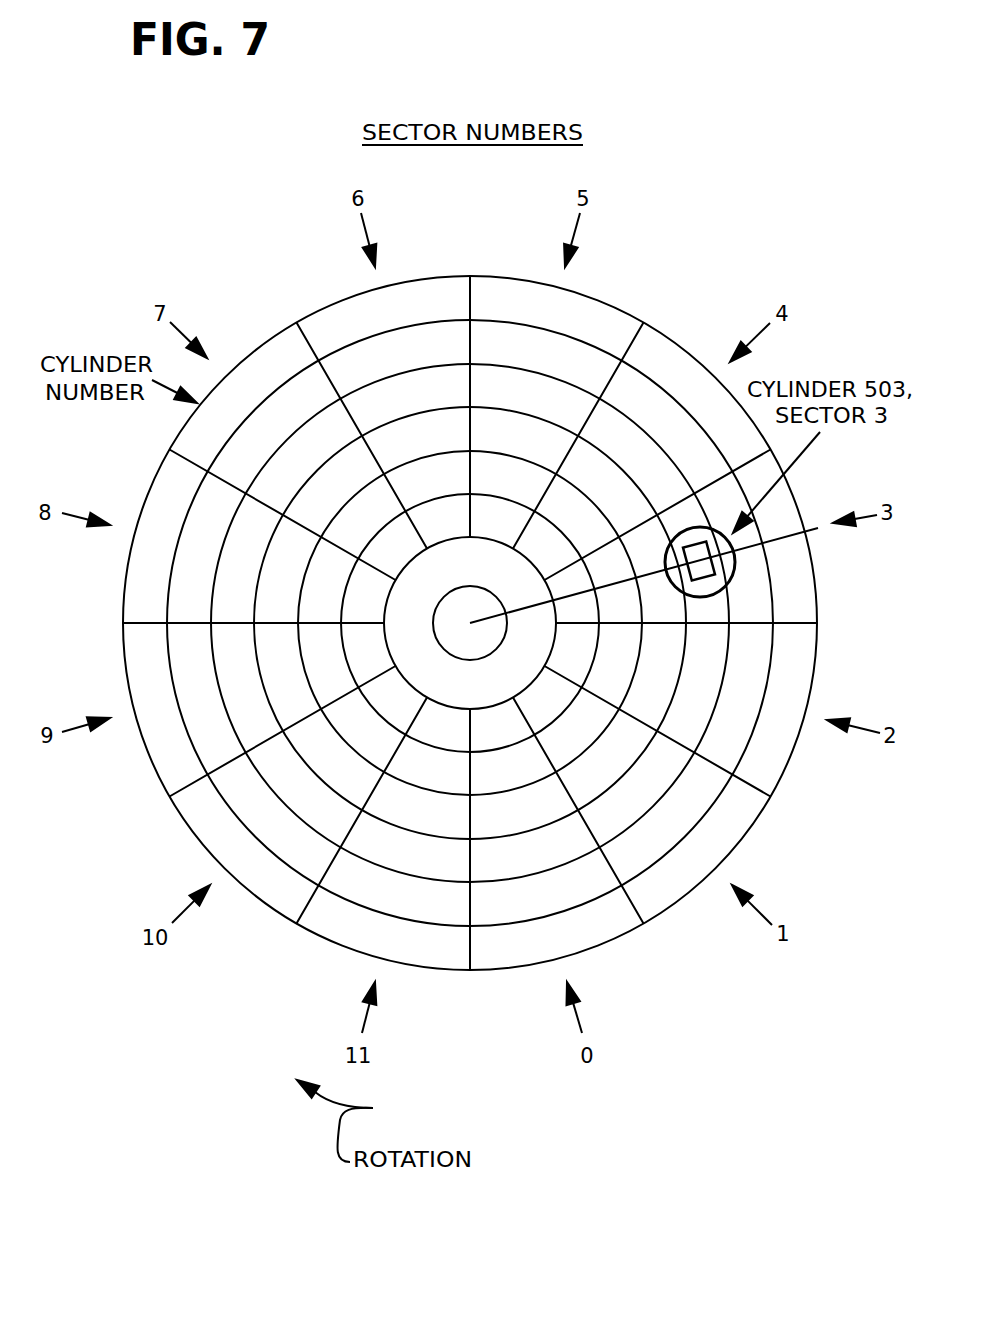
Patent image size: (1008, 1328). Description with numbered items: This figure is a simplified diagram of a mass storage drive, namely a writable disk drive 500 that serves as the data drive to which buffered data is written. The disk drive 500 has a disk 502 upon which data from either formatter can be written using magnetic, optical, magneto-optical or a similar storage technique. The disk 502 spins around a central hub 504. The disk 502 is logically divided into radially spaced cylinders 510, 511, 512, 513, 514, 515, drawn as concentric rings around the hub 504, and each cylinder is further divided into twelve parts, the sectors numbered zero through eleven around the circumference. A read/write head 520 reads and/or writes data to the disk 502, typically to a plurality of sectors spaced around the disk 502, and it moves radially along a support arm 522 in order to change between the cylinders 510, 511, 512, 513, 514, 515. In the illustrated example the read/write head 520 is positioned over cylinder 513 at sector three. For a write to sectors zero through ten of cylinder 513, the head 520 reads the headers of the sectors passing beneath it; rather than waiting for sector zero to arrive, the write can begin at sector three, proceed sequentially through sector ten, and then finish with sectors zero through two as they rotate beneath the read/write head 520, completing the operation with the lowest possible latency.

The disk drive 500 is at (775, 160).
The disk 502 is at (783, 777).
The hub 504 is at (478, 638).
The cylinder 510 is at (395, 553).
The cylinder 511 is at (360, 517).
The cylinder 512 is at (347, 472).
The cylinder 513 is at (330, 430).
The cylinder 514 is at (313, 388).
The cylinder 515 is at (277, 348).
The read/write head 520 is at (730, 580).
The support arm 522 is at (818, 528).